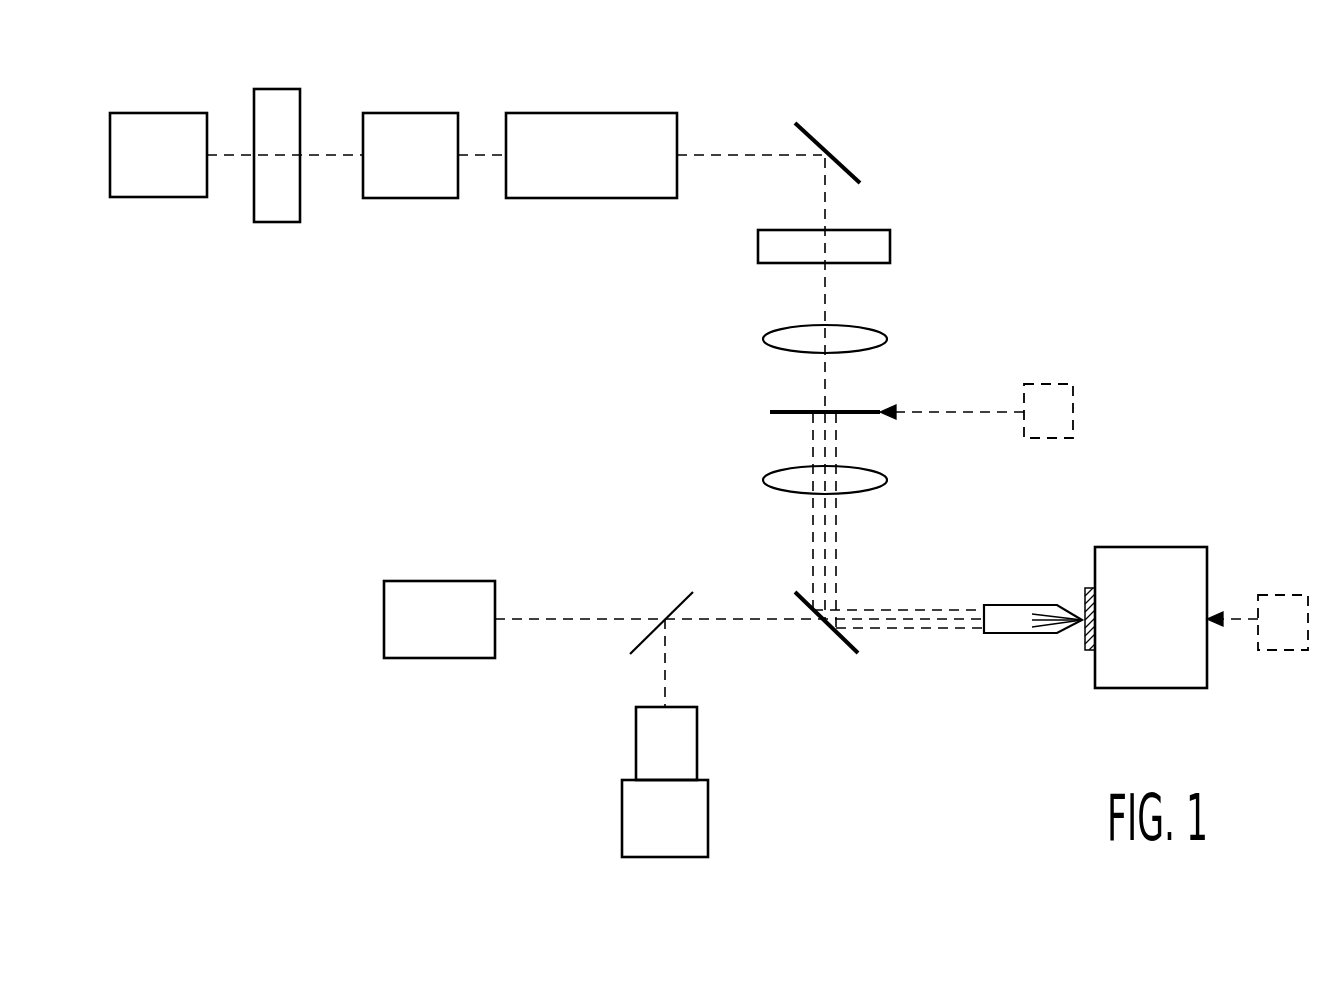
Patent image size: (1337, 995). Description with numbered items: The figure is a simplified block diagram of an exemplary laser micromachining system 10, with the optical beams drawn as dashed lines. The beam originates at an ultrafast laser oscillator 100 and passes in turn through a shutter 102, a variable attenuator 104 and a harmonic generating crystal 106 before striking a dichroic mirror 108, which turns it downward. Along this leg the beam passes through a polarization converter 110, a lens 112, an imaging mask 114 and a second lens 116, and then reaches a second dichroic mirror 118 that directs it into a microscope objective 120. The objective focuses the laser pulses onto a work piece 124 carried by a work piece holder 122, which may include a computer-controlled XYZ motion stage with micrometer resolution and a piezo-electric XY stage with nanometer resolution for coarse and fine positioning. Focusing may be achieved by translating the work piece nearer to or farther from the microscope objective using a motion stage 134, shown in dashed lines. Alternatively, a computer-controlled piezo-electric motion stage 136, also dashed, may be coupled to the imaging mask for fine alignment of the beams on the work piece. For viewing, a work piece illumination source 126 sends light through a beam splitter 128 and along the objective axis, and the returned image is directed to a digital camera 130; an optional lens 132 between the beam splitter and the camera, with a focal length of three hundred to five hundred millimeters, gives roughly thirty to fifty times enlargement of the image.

The laser micromachining system 10 is at (1003, 45).
The ultrafast laser oscillator 100 is at (148, 113).
The shutter 102 is at (275, 89).
The variable attenuator 104 is at (408, 113).
The harmonic generating crystal 106 is at (563, 113).
The dichroic mirror 108 is at (837, 158).
The polarization converter 110 is at (758, 247).
The lens 112 is at (763, 340).
The imaging mask 114 is at (870, 411).
The lens 116 is at (763, 480).
The dichroic mirror 118 is at (845, 645).
The microscope objective 120 is at (1000, 605).
The work piece holder 122 is at (1158, 547).
The work piece 124 is at (1090, 588).
The work piece illumination source 126 is at (418, 581).
The beam splitter 128 is at (668, 605).
The digital camera 130 is at (622, 803).
The lens 132 is at (636, 745).
The motion stage 134 is at (1288, 595).
The motion stage 136 is at (1073, 398).